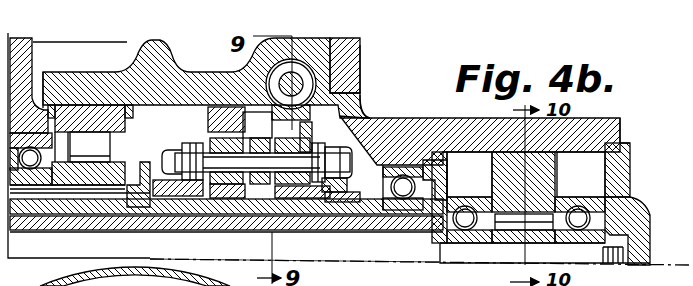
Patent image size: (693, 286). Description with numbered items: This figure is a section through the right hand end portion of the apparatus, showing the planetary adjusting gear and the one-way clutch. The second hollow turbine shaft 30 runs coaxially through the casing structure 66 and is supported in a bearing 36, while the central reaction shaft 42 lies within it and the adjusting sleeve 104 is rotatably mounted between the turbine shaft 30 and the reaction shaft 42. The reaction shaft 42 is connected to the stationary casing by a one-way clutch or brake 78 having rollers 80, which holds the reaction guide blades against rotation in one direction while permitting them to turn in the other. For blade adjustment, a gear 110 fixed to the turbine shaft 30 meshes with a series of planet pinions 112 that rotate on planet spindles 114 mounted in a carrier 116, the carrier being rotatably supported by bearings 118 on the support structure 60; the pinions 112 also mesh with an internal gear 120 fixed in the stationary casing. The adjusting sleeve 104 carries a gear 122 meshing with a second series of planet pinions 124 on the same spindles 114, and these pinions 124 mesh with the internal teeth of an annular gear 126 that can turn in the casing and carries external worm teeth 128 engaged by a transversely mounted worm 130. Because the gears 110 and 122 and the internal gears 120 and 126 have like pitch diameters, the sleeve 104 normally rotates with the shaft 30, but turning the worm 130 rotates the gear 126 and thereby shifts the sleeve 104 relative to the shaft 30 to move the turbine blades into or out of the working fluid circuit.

The side wall 66 is at (32, 85).
The internal gear 120 is at (221, 95).
The worm 130 is at (360, 43).
The external worm teeth 128 is at (360, 80).
The annular gear 126 is at (363, 104).
The adjusting sleeve 104 is at (352, 222).
The bearing support 60 is at (75, 166).
The bearing 36 is at (100, 143).
The planet pinions 112 is at (194, 158).
The planet spindles 114 is at (188, 152).
The second series of planet pinions 124 is at (282, 136).
The carrier 116 is at (330, 152).
The gear 110 is at (241, 213).
The gear 122 is at (295, 218).
The bearings 118 is at (177, 208).
The second hollow turbine shaft 30 is at (207, 208).
The one-way clutch or brake 78 is at (553, 180).
The rollers 80 is at (512, 226).
The reaction shaft 42 is at (377, 260).